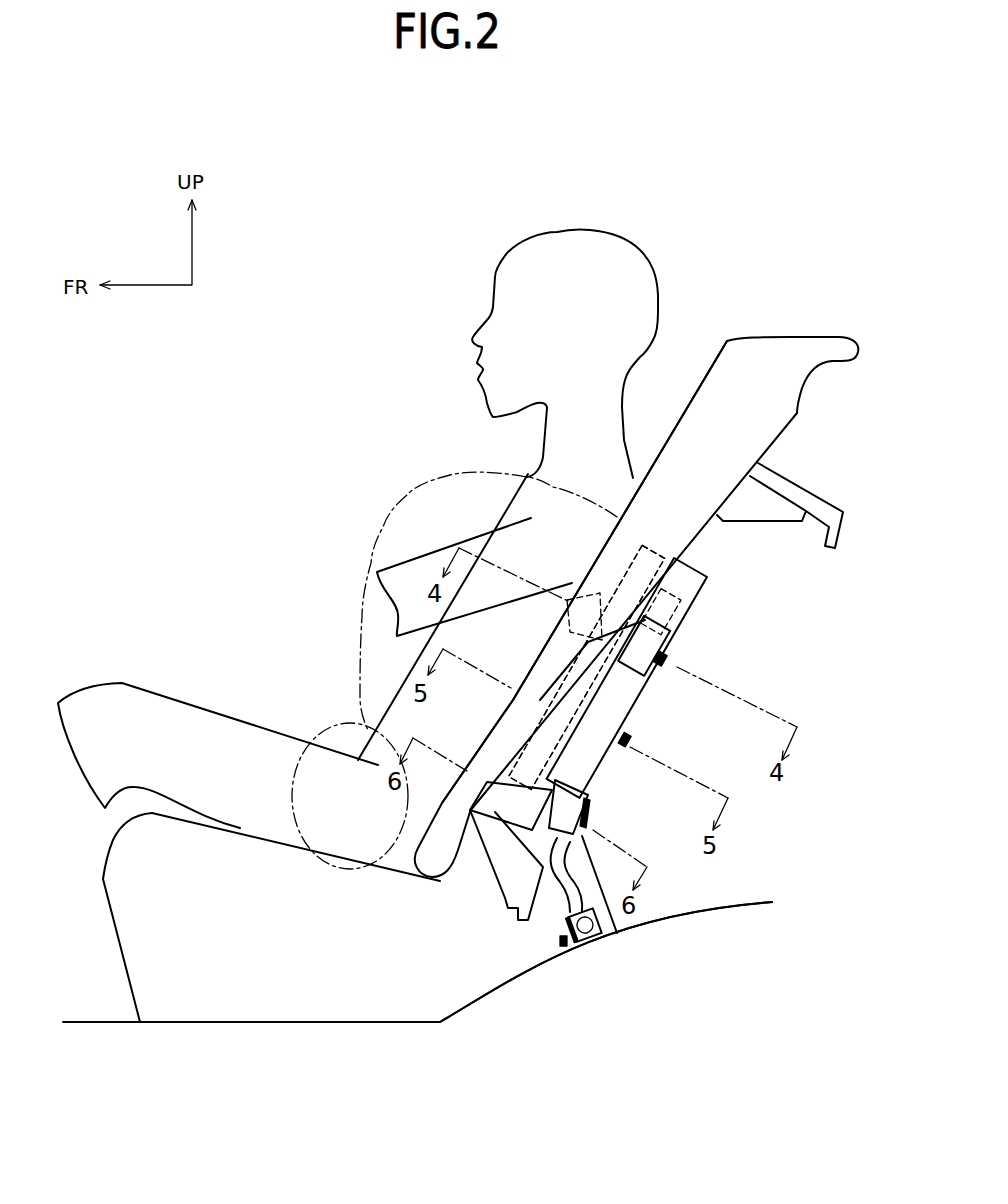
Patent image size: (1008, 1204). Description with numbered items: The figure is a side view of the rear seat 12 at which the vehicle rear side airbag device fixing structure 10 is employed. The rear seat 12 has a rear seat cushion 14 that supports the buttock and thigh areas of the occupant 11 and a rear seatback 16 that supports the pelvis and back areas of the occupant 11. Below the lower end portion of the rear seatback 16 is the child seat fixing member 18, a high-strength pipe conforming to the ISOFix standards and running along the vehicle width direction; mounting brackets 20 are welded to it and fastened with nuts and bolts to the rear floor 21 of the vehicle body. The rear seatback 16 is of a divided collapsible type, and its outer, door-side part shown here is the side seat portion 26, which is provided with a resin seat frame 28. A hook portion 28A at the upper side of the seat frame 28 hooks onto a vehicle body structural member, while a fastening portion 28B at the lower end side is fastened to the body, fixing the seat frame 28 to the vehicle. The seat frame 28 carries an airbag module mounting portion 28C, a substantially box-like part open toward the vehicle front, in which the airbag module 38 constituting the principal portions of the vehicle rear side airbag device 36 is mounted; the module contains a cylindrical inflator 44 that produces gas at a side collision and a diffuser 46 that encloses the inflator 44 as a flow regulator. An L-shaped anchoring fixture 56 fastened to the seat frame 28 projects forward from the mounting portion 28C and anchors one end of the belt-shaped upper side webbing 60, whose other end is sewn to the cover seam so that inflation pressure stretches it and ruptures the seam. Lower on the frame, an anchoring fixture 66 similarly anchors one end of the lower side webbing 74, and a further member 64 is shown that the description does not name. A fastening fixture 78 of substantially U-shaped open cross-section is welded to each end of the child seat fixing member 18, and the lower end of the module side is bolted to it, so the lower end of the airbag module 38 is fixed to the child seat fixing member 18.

The vehicle rear side airbag device fixing structure 10 is at (658, 890).
The occupant 11 is at (510, 255).
The rear seat 12 is at (338, 787).
The rear seat cushion 14 is at (237, 827).
The rear seatback 16 is at (584, 572).
The child seat fixing member 18 is at (600, 927).
The mounting bracket 20 is at (587, 870).
The rear floor 21 is at (750, 902).
The side seat portion 26 is at (737, 337).
The seat frame 28 is at (780, 353).
The hook portion 28A is at (830, 504).
The fastening portion 28B is at (508, 898).
The airbag module mounting portion 28C is at (707, 577).
The vehicle rear side airbag device 36 is at (587, 667).
The airbag module 38 is at (664, 548).
The inflator 44 is at (690, 613).
The diffuser 46 is at (407, 493).
The anchoring fixture 56 is at (653, 667).
The upper side webbing 60 is at (600, 603).
The lower bracket 64 is at (567, 893).
The anchoring fixture 66 is at (588, 795).
The lower side webbing 74 is at (500, 810).
The fastening fixture 78 is at (580, 947).